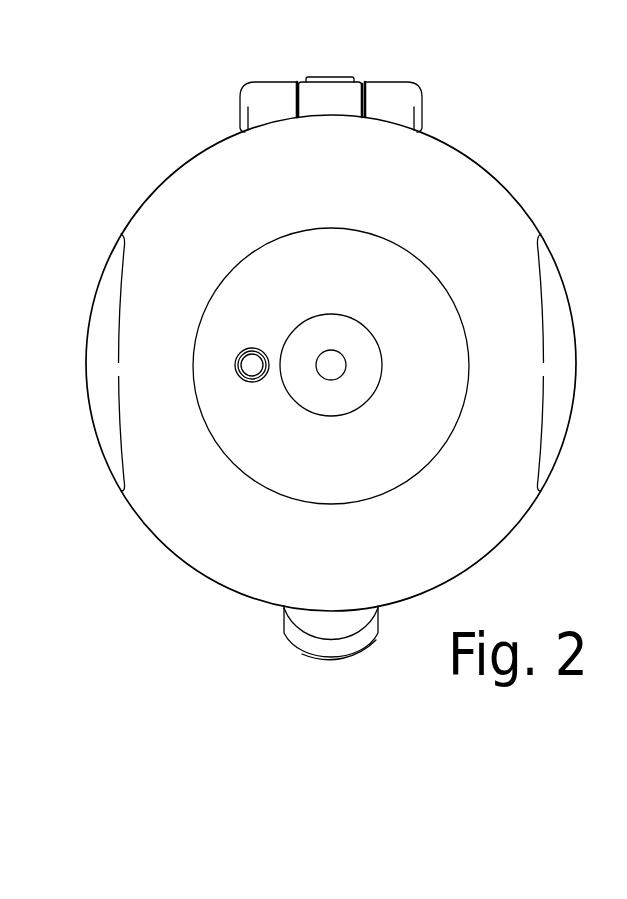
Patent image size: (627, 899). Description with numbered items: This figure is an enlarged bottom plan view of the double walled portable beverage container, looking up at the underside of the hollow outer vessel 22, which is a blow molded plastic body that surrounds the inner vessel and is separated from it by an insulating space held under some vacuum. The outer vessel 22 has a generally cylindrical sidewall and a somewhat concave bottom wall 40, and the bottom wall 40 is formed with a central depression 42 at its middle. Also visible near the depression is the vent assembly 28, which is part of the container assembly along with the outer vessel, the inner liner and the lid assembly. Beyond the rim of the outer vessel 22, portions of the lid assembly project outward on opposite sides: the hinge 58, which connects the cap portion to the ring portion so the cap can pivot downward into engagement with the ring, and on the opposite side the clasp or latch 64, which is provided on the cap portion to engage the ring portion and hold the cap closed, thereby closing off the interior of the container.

The outer vessel 22 is at (478, 162).
The vent assembly 28 is at (250, 367).
The bottom wall 40 is at (207, 200).
The central depression 42 is at (270, 490).
The hinge 58 is at (332, 93).
The clasp or latch 64 is at (312, 642).